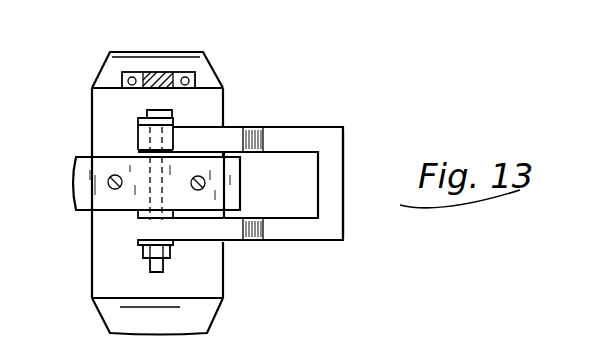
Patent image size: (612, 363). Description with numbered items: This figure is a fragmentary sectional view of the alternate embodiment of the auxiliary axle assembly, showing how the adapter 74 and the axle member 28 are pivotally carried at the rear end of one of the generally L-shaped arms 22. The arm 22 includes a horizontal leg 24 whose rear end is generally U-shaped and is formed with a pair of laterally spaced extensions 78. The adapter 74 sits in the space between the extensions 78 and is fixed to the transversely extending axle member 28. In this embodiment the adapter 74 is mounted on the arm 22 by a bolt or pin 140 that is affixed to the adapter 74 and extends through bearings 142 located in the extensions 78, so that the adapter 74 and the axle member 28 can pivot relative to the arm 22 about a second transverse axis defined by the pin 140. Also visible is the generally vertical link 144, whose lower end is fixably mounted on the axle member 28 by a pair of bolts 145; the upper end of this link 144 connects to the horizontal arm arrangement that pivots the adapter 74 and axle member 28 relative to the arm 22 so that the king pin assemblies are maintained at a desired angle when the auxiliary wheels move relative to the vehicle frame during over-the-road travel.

The arm 22 is at (297, 105).
The horizontal leg 24 is at (328, 225).
The axle member 28 is at (103, 96).
The adapter 74 is at (80, 175).
The extensions 78 is at (303, 133).
The bolt or pin 140 is at (150, 165).
The bearings 142 is at (173, 137).
The vertical link 144 is at (157, 77).
The bolts 145 is at (130, 78).